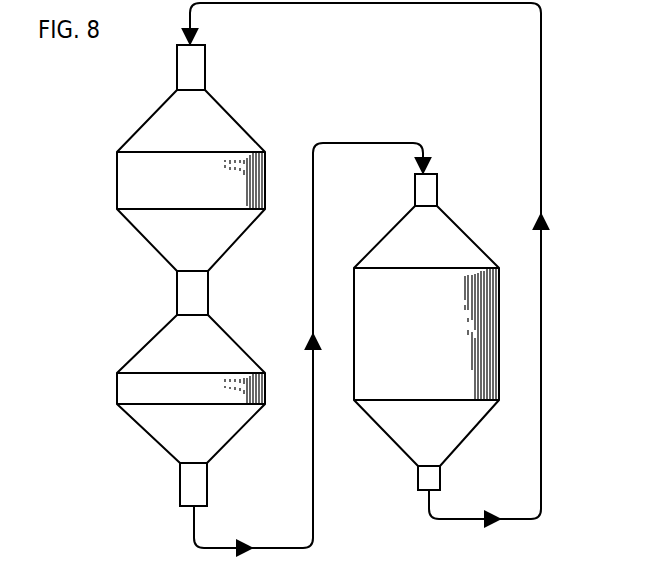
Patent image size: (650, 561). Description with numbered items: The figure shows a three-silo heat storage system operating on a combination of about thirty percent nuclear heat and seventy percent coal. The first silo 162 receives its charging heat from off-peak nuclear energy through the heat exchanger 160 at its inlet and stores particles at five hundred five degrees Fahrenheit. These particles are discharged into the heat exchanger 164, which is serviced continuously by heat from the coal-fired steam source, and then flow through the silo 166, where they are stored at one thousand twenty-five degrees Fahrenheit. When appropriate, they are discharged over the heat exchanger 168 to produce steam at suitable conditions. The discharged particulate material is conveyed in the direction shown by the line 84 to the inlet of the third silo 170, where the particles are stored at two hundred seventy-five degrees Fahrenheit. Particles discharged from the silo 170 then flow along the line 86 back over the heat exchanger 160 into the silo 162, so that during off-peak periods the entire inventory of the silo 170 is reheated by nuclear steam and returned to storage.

The heat exchanger 160 is at (187, 65).
The first silo 162 is at (133, 179).
The heat exchanger 164 is at (188, 292).
The silo 166 is at (133, 395).
The heat exchanger 168 is at (188, 490).
The third silo 170 is at (465, 250).
The line 84 is at (313, 473).
The line 86 is at (543, 417).